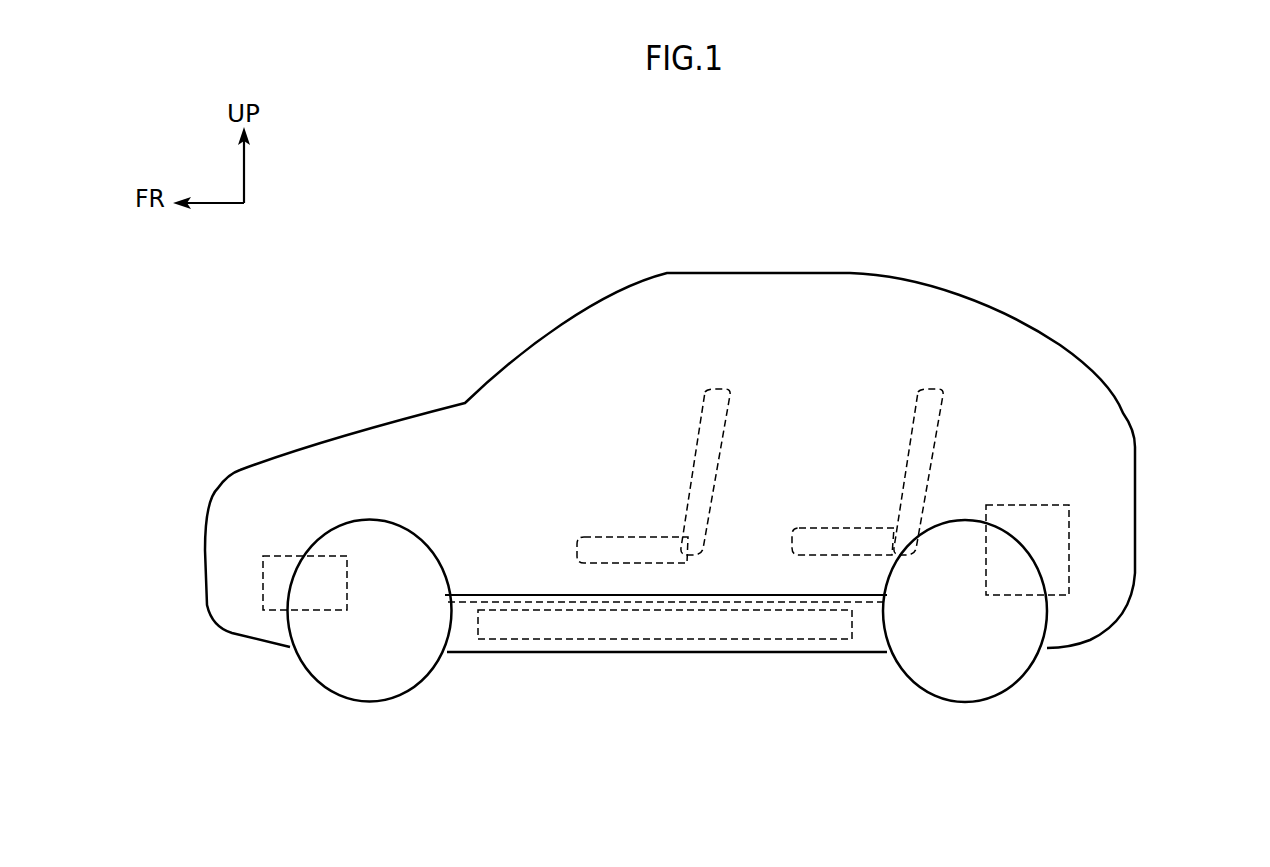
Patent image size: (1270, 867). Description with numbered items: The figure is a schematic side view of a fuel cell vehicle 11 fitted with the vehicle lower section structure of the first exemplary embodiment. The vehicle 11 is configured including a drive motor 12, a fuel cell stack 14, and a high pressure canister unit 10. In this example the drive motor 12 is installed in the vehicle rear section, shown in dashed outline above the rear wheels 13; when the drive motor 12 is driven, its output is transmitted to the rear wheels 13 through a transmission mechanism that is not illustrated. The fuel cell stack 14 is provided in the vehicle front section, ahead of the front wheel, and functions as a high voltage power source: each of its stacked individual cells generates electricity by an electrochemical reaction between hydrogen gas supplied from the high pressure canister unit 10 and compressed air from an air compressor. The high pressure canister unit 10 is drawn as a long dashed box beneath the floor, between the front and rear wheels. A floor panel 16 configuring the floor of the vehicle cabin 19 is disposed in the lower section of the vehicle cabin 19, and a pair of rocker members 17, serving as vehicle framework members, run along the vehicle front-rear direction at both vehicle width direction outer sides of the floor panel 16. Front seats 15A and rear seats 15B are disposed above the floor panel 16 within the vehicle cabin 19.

The high pressure canister unit 10 is at (665, 657).
The fuel cell vehicle 11 is at (992, 213).
The drive motor 12 is at (1069, 558).
The rear wheels 13 is at (1033, 663).
The fuel cell stack 14 is at (263, 580).
The front seats 15A is at (723, 386).
The rear seats 15B is at (937, 386).
The floor panel 16 is at (771, 588).
The rocker members 17 is at (843, 600).
The vehicle cabin 19 is at (815, 340).